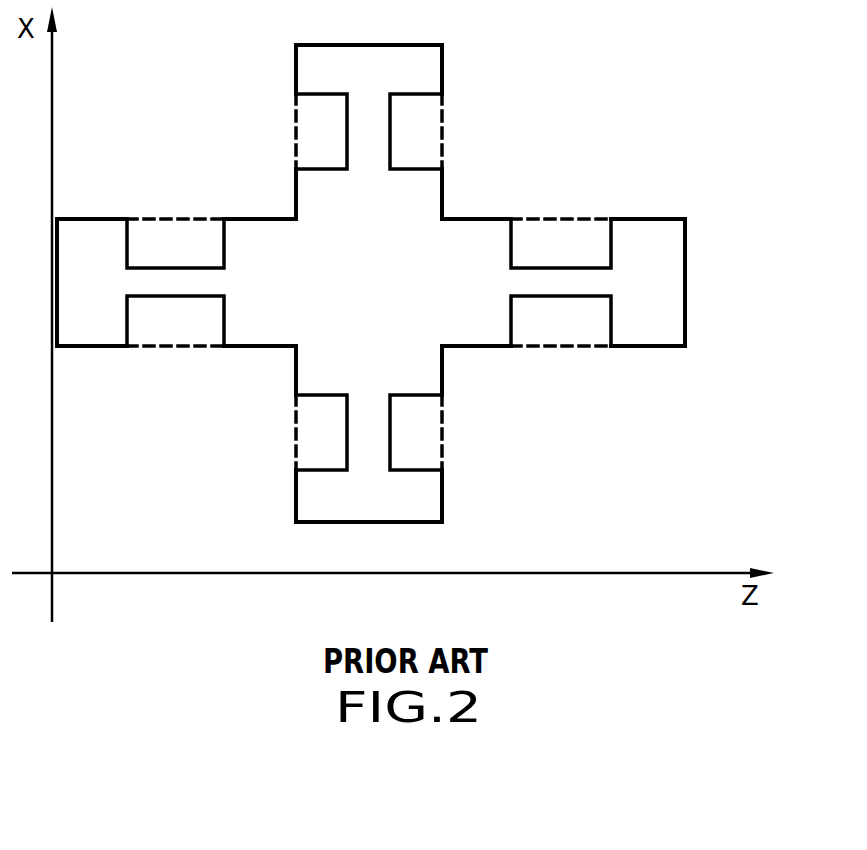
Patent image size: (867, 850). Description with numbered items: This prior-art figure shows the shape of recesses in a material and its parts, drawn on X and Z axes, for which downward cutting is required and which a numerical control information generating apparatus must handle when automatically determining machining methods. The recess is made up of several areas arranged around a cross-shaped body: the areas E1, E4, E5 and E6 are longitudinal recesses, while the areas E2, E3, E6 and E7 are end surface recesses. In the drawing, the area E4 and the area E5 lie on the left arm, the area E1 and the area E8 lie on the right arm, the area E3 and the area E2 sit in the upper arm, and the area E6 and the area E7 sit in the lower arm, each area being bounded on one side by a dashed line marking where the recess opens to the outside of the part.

The area E1 is at (561, 243).
The area E2 is at (416, 131).
The area E3 is at (321, 131).
The area E4 is at (175, 243).
The area E5 is at (175, 321).
The area E6 is at (321, 432).
The area E7 is at (416, 432).
The area E8 is at (561, 321).